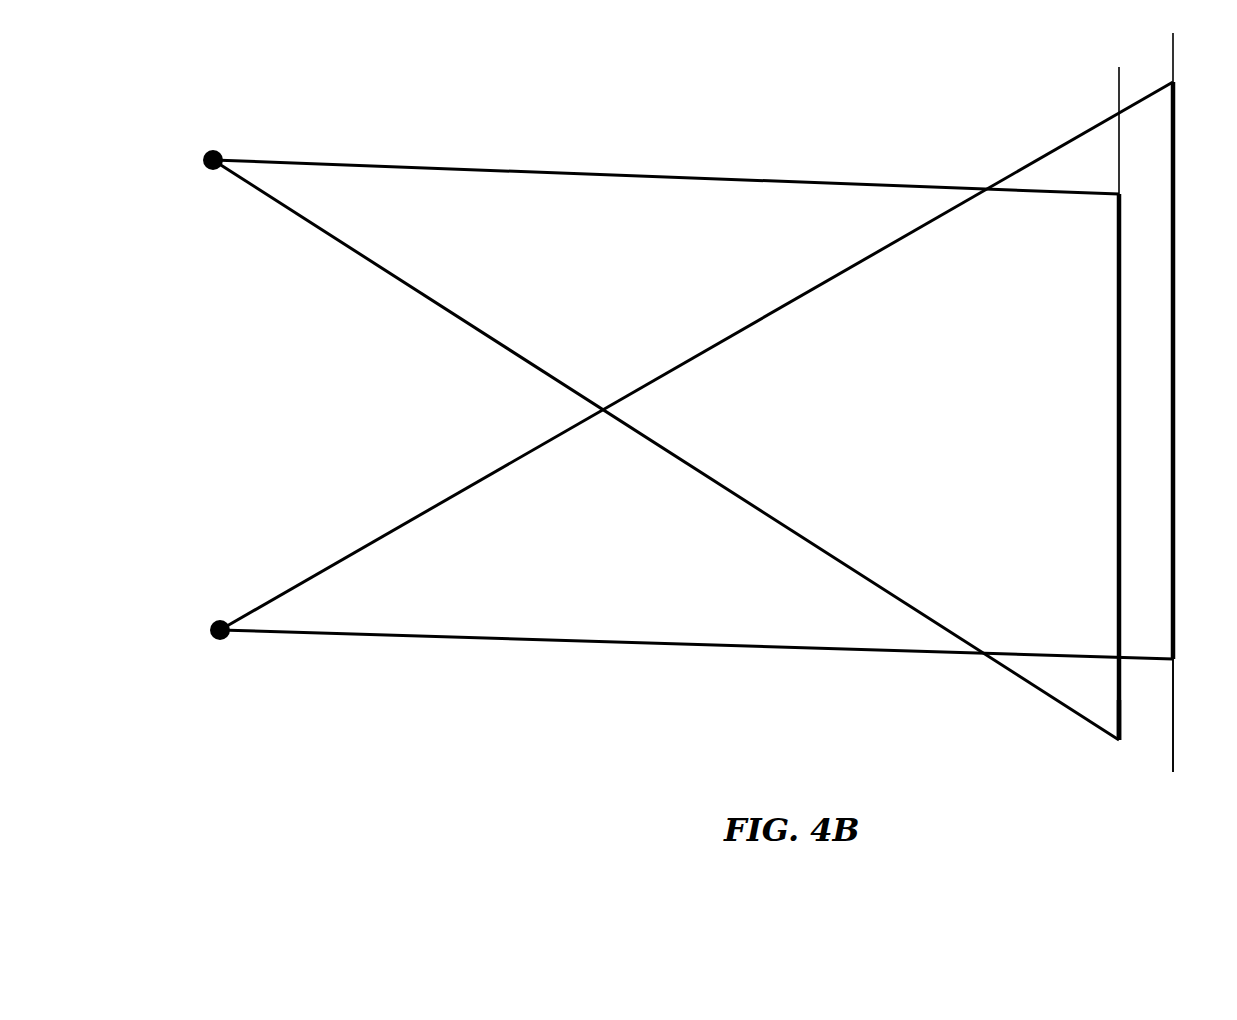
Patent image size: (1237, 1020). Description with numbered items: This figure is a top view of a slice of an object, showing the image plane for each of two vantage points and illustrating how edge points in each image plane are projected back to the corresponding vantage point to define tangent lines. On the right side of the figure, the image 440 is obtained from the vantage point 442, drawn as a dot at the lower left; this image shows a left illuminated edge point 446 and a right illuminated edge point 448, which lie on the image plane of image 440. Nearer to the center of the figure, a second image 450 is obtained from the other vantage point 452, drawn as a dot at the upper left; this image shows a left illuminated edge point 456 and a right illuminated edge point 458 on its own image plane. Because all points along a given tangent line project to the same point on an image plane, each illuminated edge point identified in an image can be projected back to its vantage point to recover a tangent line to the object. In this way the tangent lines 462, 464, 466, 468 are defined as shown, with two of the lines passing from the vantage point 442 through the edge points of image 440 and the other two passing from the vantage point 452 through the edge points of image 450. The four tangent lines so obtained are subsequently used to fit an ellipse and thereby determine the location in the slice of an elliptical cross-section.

The image 440 is at (1175, 47).
The vantage point 442 is at (214, 622).
The left illuminated edge point 446 is at (1175, 167).
The right illuminated edge point 448 is at (1173, 698).
The image 450 is at (1118, 90).
The vantage point 452 is at (207, 153).
The left illuminated edge point 456 is at (1117, 200).
The right illuminated edge point 458 is at (1117, 742).
The tangent line 462 is at (332, 634).
The tangent line 464 is at (395, 530).
The tangent line 466 is at (410, 287).
The tangent line 468 is at (377, 168).